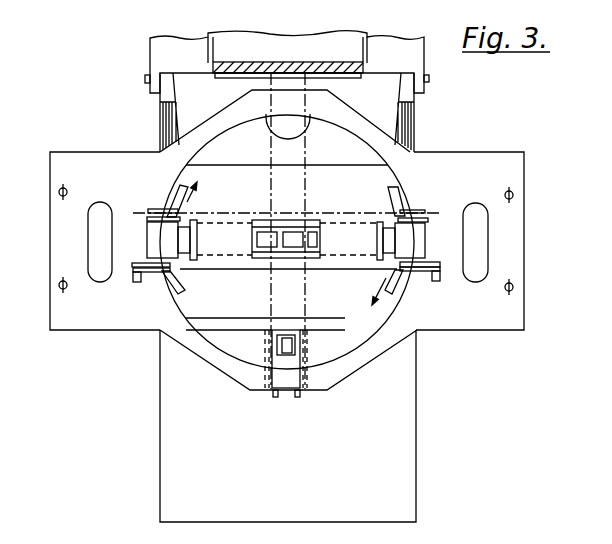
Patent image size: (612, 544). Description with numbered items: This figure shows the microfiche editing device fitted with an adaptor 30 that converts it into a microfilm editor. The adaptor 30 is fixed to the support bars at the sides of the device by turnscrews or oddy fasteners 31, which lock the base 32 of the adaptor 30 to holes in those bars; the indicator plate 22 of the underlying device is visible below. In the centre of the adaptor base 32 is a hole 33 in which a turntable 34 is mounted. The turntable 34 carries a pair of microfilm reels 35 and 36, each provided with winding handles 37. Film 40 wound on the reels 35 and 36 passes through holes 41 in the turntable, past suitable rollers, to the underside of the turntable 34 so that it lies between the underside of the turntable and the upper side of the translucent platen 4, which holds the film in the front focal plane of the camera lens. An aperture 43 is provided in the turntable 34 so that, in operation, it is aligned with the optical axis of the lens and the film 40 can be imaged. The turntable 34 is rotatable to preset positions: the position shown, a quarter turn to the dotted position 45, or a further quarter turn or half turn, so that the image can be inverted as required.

The translucent platen 4 is at (326, 193).
The indicator plate 22 is at (285, 475).
The adaptor 30 is at (455, 322).
The turnscrews or oddy fasteners 31 is at (60, 280).
The base 32 is at (108, 318).
The hole 33 is at (356, 147).
The turntable 34 is at (357, 265).
The microfilm reel 35 is at (142, 214).
The microfilm reel 36 is at (433, 217).
The winding handles 37 is at (138, 282).
The film 40 is at (262, 248).
The holes 41 is at (188, 200).
The aperture 43 is at (310, 262).
The dotted position 45 is at (270, 297).